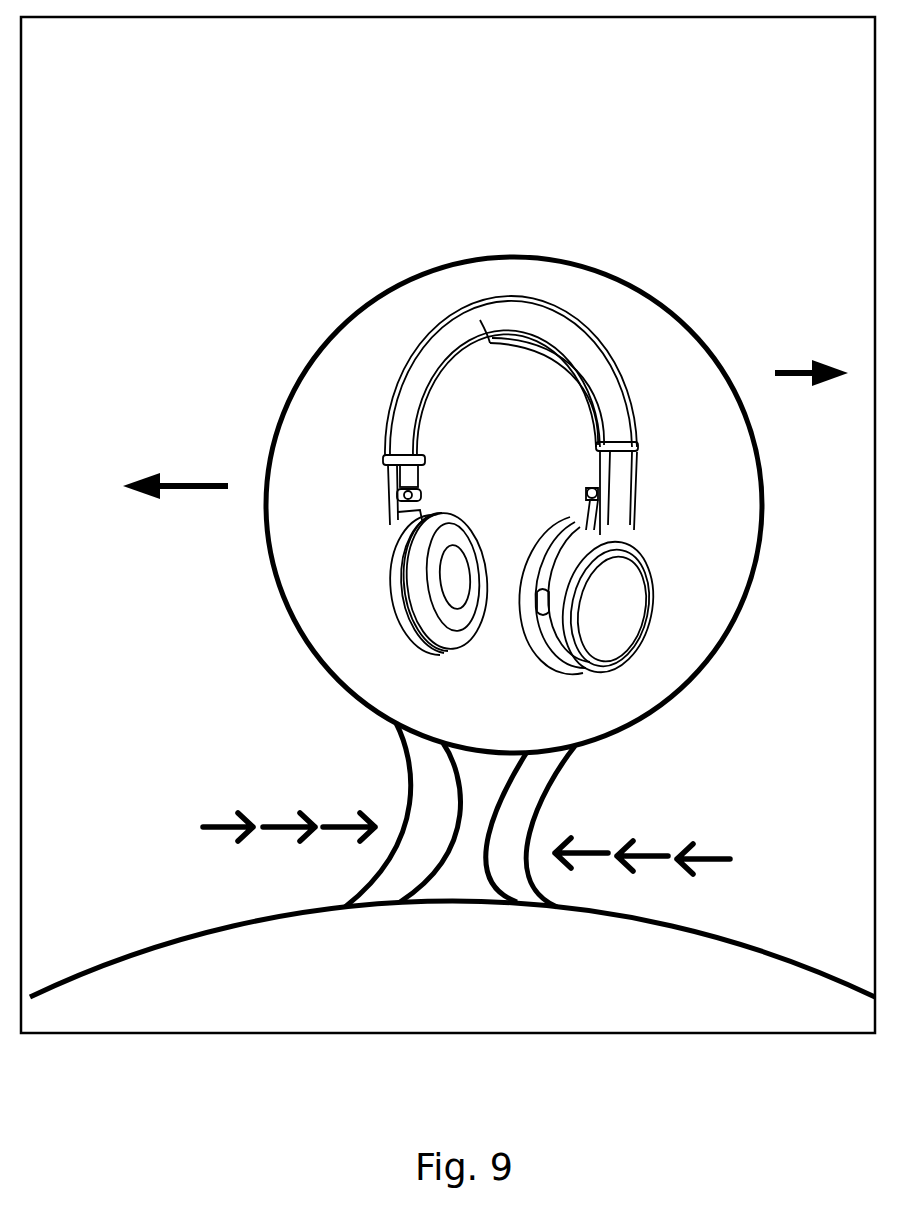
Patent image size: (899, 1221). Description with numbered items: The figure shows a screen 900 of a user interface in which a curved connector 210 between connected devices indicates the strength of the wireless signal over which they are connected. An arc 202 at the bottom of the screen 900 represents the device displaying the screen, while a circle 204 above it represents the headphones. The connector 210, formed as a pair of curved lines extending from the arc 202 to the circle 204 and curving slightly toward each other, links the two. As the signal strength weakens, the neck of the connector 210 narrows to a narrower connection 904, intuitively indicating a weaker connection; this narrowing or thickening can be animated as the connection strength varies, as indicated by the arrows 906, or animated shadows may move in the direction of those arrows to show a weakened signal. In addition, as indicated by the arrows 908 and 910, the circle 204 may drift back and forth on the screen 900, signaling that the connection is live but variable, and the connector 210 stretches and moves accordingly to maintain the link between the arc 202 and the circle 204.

The screen 900 is at (91, 62).
The arc 202 is at (763, 957).
The circle 204 is at (682, 692).
The curved connector 210 is at (384, 879).
The narrower connection 904 is at (452, 893).
The arrows 906 is at (300, 797).
The arrow 908 is at (800, 367).
The arrow 910 is at (188, 483).